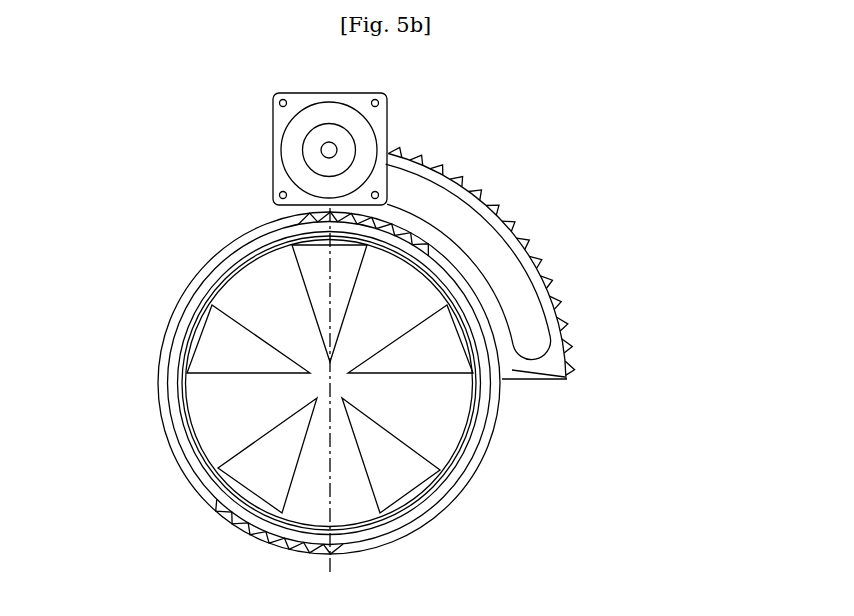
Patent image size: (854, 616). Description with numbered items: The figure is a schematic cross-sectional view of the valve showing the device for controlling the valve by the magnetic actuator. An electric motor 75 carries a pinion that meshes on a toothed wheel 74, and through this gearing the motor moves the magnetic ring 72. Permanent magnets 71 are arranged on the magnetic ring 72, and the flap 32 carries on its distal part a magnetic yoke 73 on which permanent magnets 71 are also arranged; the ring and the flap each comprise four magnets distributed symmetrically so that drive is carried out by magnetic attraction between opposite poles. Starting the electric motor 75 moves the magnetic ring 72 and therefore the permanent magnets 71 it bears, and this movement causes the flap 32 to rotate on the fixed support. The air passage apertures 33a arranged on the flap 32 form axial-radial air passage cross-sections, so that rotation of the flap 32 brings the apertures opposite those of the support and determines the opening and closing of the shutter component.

The electric motor 75 is at (353, 125).
The toothed wheel 74 is at (508, 227).
The magnetic ring 72 is at (567, 379).
The magnetic yoke 73 is at (473, 408).
The permanent magnets 71 is at (310, 553).
The flap 32 is at (217, 398).
The air passage apertures 33a is at (380, 490).